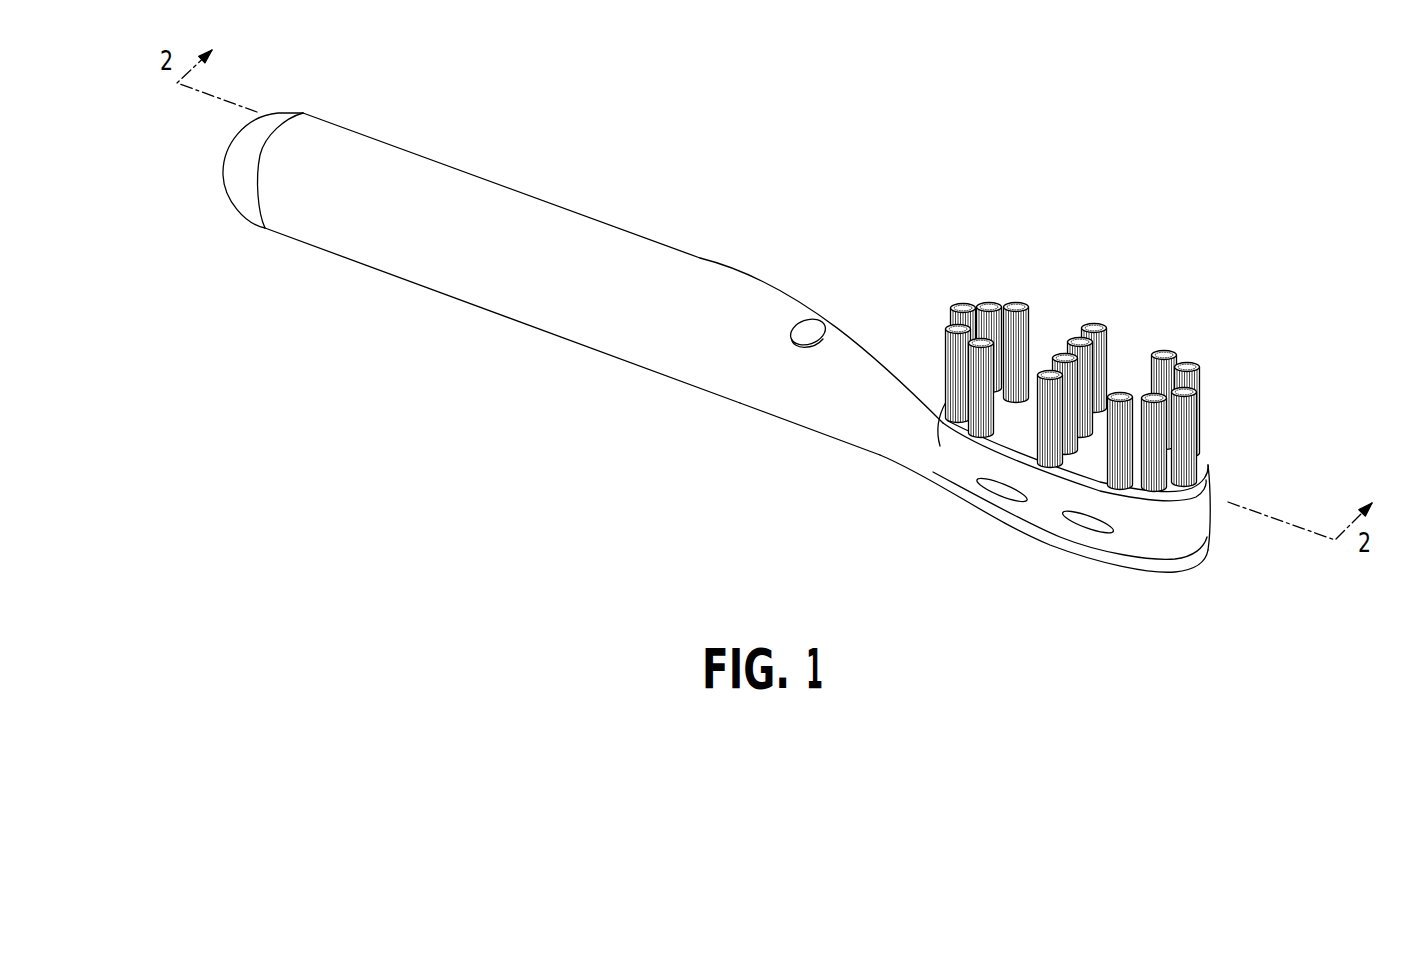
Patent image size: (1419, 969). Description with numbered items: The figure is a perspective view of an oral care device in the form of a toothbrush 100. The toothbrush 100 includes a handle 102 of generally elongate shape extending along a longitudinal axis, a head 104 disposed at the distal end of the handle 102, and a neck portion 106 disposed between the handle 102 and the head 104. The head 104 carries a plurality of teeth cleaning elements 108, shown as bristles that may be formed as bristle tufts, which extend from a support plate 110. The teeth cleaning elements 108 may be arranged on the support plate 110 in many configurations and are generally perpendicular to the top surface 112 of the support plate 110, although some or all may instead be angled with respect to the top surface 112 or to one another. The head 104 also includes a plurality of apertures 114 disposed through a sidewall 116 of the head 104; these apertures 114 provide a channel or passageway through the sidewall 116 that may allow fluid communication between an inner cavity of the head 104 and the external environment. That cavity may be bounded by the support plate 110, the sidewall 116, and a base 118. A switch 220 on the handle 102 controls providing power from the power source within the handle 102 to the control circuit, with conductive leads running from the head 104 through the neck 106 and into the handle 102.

The toothbrush 100 is at (1228, 302).
The handle 102 is at (422, 268).
The head 104 is at (1119, 550).
The neck portion 106 is at (865, 377).
The teeth cleaning elements 108 is at (1145, 382).
The support plate 110 is at (1082, 463).
The top surface 112 is at (1139, 445).
The apertures 114 is at (990, 490).
The sidewall 116 is at (1132, 518).
The base 118 is at (1207, 542).
The switch 220 is at (808, 332).